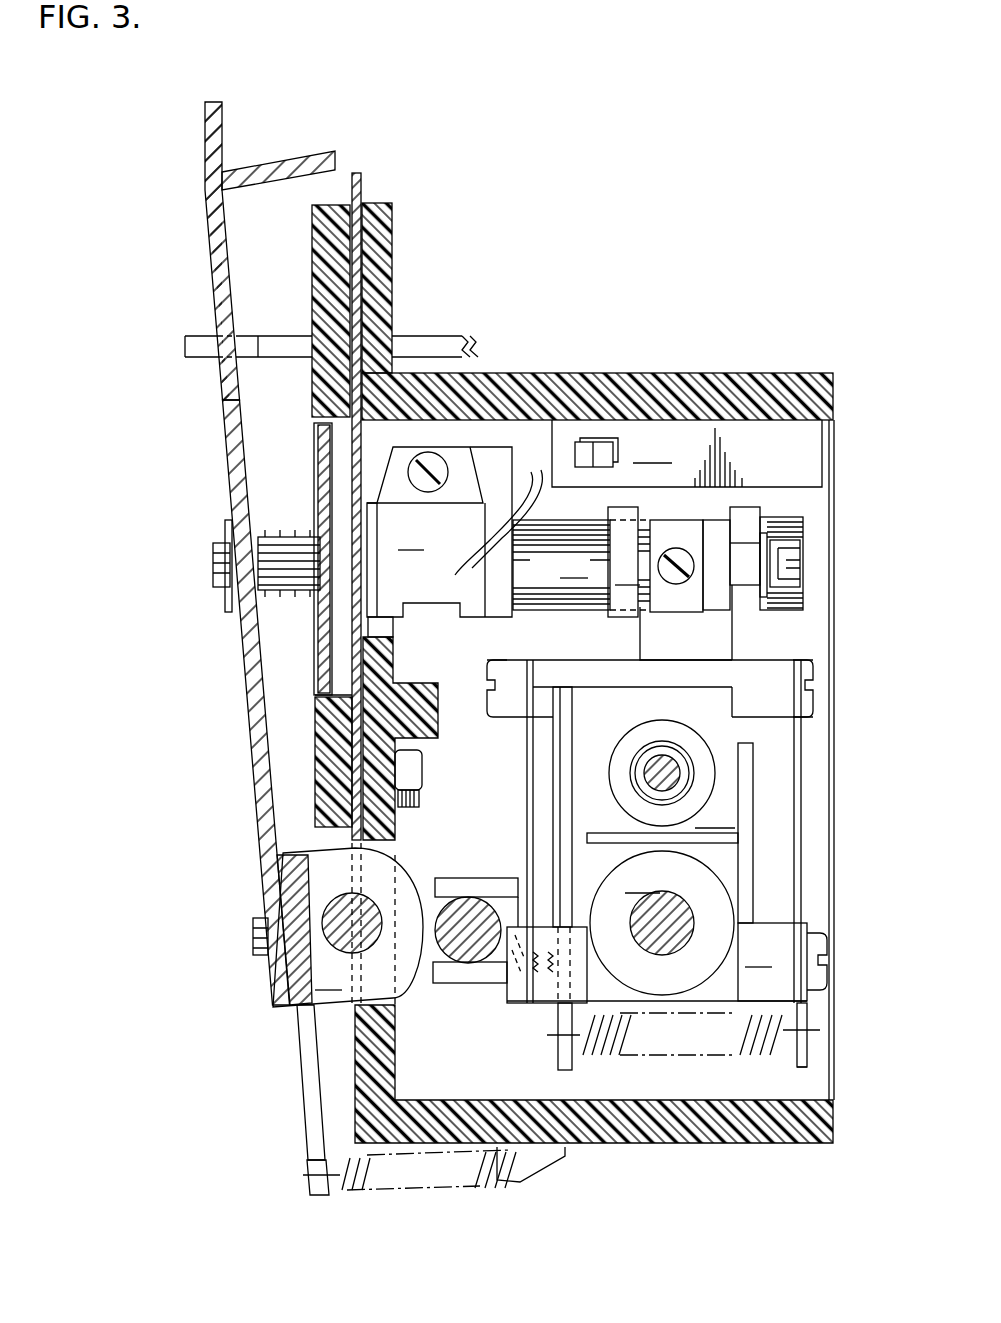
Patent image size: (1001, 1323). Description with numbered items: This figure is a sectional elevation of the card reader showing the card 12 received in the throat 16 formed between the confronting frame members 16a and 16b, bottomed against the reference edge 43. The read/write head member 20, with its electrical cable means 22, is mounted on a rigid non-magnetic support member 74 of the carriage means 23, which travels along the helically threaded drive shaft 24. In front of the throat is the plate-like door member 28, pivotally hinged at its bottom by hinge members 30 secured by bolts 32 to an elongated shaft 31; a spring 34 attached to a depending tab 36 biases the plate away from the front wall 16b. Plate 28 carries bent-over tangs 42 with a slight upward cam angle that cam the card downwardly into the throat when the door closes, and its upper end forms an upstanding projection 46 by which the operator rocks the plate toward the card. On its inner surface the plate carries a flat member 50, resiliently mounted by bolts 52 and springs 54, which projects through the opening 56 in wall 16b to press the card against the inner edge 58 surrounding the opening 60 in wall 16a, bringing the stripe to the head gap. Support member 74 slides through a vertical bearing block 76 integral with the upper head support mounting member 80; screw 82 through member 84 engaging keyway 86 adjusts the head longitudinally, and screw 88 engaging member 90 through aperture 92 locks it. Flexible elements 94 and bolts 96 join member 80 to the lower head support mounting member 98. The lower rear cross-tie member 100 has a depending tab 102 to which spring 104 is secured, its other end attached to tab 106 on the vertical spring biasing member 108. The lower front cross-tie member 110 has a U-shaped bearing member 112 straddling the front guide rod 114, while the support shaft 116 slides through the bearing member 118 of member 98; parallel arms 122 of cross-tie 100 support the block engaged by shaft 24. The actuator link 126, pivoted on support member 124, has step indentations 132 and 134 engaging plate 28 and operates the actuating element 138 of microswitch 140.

The card 12 is at (357, 172).
The throat 16 is at (366, 205).
The frame member 16a is at (392, 240).
The frame member 16b is at (312, 230).
The read/write head member 20 is at (439, 542).
The electrical cable means 22 is at (502, 509).
The carriage means 23 is at (788, 655).
The helically threaded drive shaft 24 is at (668, 765).
The door member 28 is at (248, 682).
The hinge member 30 is at (348, 927).
The elongated shaft 31 is at (330, 918).
The bolt 32 is at (256, 934).
The spring 34 is at (472, 1190).
The depending tab 36 is at (306, 1078).
The tang 42 is at (320, 160).
The reference edge 43 is at (405, 690).
The upstanding projection 46 is at (208, 138).
The flat member 50 is at (317, 482).
The bolt 52 is at (216, 545).
The spring 54 is at (292, 538).
The opening 56 is at (318, 427).
The inner edge 58 is at (386, 457).
The opening 60 is at (428, 452).
The support member 74 is at (561, 565).
The bearing block 76 is at (629, 562).
The upper head support mounting member 80 is at (594, 665).
The screw 82 is at (672, 550).
The member 84 is at (716, 524).
The keyway 86 is at (804, 563).
The screw 88 is at (780, 540).
The member 90 is at (716, 598).
The aperture 92 is at (745, 583).
The flexible element 94 is at (526, 768).
The bolt 96 is at (492, 712).
The lower head support mounting member 98 is at (657, 962).
The lower rear cross-tie member 100 is at (808, 1018).
The tab portion 102 is at (808, 1060).
The spring 104 is at (600, 1050).
The tab 106 is at (560, 1062).
The vertical spring biasing member 108 is at (574, 762).
The lower front cross-tie member 110 is at (515, 995).
The U-shaped bearing member 112 is at (463, 888).
The front guide rod 114 is at (442, 940).
The support shaft 116 is at (676, 948).
The bearing member 118 is at (662, 923).
The parallel arm 122 is at (643, 805).
The support member 124 is at (692, 372).
The actuator link 126 is at (476, 347).
The step-like indentation 132 is at (217, 338).
The step-like indentation 134 is at (259, 338).
The actuating element 138 is at (590, 467).
The microswitch 140 is at (687, 453).